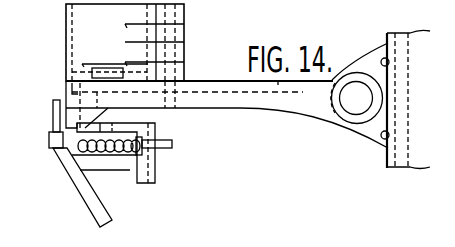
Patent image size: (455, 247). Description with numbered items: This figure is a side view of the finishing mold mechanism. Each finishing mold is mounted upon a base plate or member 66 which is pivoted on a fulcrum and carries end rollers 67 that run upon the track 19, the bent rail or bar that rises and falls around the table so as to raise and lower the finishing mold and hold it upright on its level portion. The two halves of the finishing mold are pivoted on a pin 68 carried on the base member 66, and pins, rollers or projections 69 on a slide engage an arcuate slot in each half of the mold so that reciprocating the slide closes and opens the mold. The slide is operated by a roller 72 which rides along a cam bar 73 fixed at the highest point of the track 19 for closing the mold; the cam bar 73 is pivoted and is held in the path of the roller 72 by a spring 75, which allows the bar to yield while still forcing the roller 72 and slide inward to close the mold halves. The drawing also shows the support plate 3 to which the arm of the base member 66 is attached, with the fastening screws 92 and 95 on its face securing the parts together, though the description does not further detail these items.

The plate 3 is at (397, 153).
The track 19 is at (85, 188).
The base plate 66 is at (203, 98).
The end rollers 67 is at (54, 109).
The pin 68 is at (168, 100).
The pins 69 is at (67, 70).
The roller 72 is at (77, 138).
The cam bar 73 is at (143, 147).
The spring 75 is at (100, 153).
The screw 92 is at (390, 63).
The screw 95 is at (390, 136).